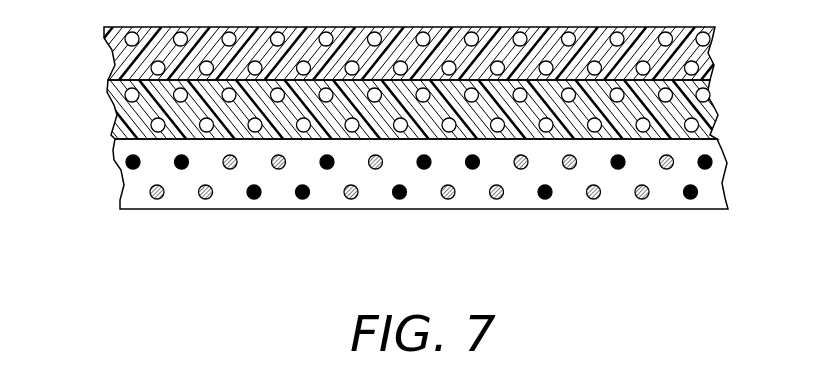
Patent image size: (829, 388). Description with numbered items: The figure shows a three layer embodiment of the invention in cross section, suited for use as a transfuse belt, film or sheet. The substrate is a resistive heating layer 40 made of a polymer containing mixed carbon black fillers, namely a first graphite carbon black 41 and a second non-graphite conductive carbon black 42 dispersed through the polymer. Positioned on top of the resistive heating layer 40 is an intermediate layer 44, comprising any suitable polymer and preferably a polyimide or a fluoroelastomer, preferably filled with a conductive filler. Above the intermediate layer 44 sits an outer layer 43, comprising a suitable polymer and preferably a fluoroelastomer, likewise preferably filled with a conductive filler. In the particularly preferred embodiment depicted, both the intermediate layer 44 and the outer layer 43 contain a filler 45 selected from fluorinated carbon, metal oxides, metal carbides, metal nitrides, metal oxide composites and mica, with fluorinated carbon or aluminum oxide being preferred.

The resistive heating layer 40 is at (110, 150).
The first graphite carbon black 41 is at (303, 200).
The second non-graphite conductive carbon black 42 is at (207, 200).
The outer layer 43 is at (105, 38).
The intermediate layer 44 is at (103, 87).
The filler 45 is at (709, 99).